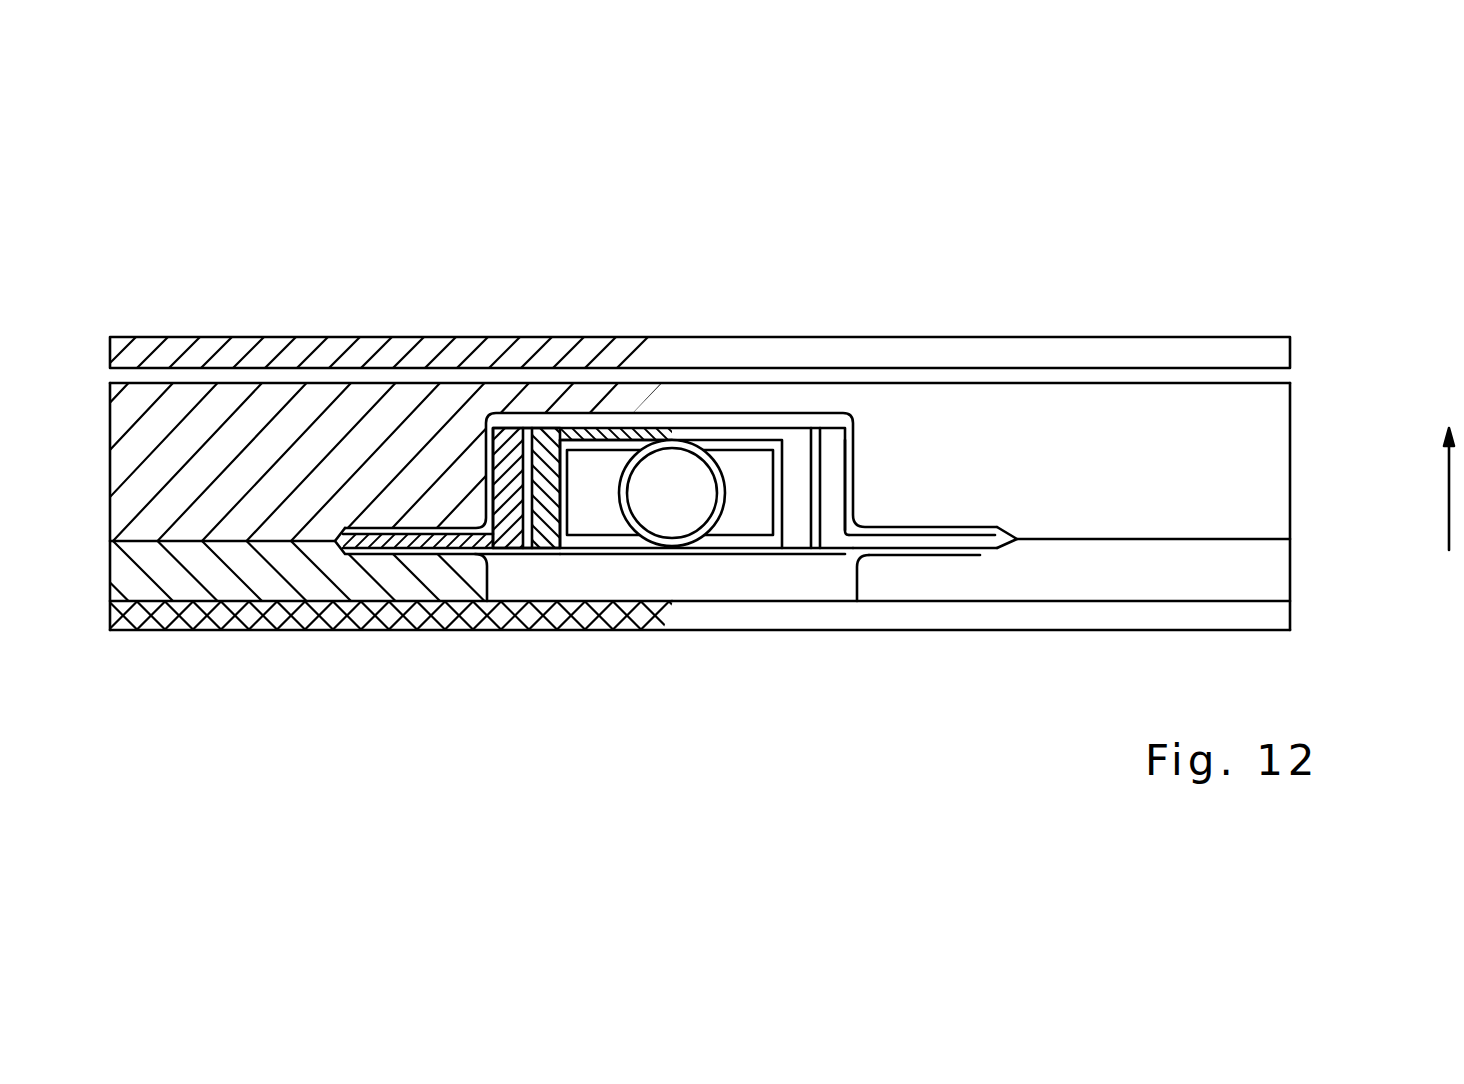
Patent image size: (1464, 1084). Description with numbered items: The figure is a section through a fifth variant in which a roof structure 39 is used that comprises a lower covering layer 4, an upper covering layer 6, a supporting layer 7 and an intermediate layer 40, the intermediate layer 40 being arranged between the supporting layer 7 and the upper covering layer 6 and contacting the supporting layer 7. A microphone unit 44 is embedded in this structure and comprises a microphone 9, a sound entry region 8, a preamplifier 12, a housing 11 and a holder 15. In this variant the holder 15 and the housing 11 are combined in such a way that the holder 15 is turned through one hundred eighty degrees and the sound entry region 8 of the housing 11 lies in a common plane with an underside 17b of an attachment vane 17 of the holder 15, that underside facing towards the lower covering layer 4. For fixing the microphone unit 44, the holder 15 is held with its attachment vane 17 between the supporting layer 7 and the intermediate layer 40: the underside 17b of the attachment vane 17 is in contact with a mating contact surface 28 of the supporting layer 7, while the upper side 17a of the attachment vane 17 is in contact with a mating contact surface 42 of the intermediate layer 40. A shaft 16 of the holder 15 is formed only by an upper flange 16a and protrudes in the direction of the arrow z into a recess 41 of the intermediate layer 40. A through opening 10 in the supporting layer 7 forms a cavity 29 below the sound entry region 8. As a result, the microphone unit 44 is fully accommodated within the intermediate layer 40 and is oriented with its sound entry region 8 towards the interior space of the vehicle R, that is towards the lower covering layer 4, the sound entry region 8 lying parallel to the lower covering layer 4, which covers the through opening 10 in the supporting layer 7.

The roof structure 39 is at (1306, 287).
The intermediate layer 40 is at (1260, 460).
The upper covering layer 6 is at (1275, 355).
The lower covering layer 4 is at (1272, 615).
The supporting layer 7 is at (1260, 562).
The through opening 10 is at (702, 578).
The shaft 16 is at (830, 408).
The upper flange 16a is at (838, 463).
The holder 15 is at (833, 518).
The cavity 29 is at (612, 565).
The sound entry region 8 is at (619, 548).
The preamplifier 12 is at (743, 473).
The recess 41 is at (660, 425).
The microphone 9 is at (678, 473).
The housing 11 is at (793, 453).
The mating contact surface 28 is at (902, 541).
The upper side 17a is at (965, 542).
The attachment vane 17 is at (981, 557).
The underside 17b is at (948, 556).
The mating contact surface 42 is at (920, 556).
The microphone unit 44 is at (794, 566).
The interior space of the vehicle R is at (550, 722).
The arrow z is at (1447, 490).